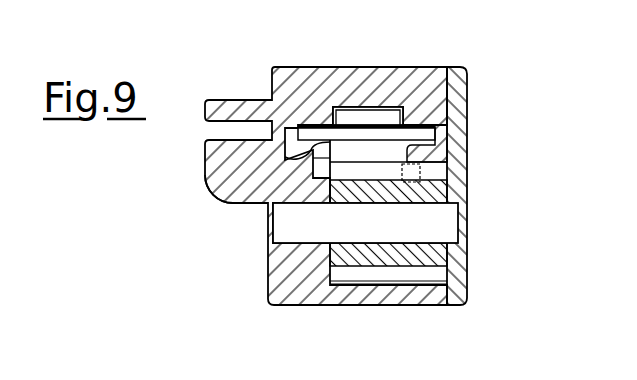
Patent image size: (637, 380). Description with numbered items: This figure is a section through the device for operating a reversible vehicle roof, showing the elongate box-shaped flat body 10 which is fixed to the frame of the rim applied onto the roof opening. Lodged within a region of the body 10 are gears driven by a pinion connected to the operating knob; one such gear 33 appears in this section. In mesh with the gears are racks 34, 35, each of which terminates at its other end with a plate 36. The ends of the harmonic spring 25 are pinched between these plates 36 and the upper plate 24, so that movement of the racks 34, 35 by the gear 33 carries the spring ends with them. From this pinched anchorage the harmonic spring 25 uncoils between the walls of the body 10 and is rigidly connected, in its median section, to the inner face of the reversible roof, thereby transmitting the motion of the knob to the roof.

The body 10 is at (313, 149).
The upper plate 24 is at (378, 115).
The harmonic spring 25 is at (355, 122).
The gear 33 is at (412, 253).
The rack 34 is at (423, 150).
The rack 35 is at (245, 200).
The plate 36 is at (315, 132).